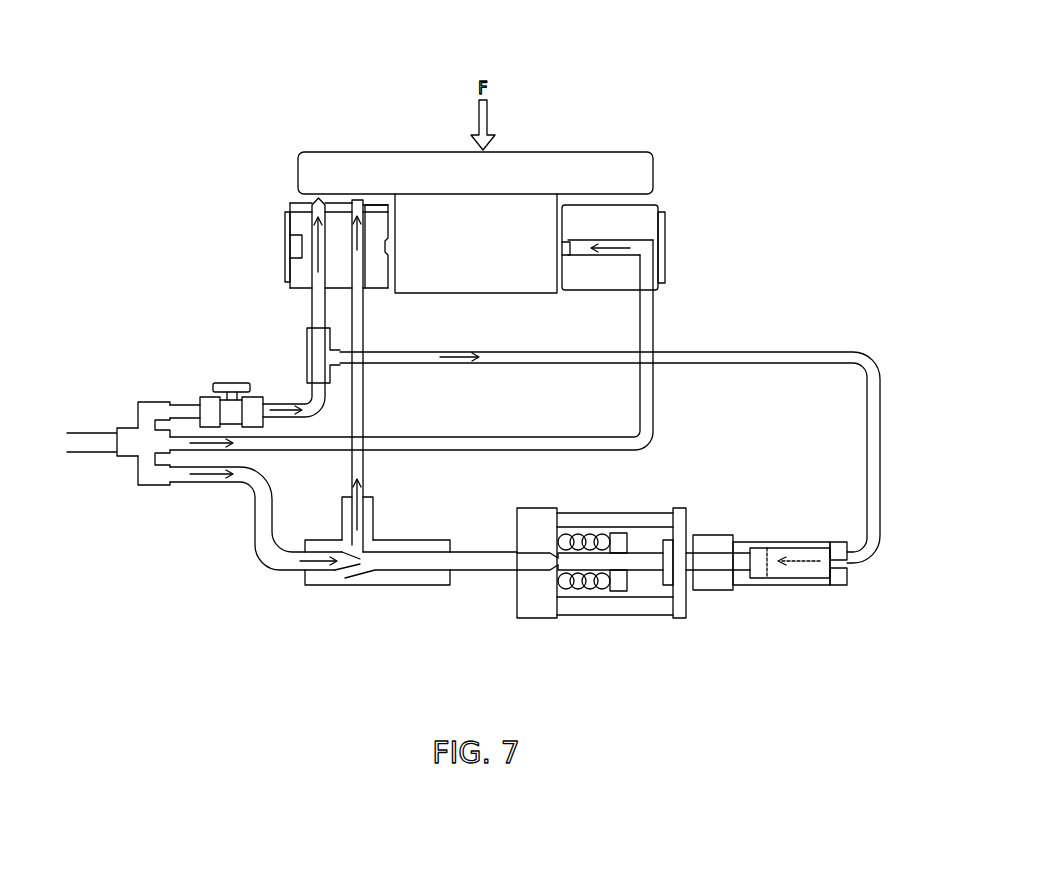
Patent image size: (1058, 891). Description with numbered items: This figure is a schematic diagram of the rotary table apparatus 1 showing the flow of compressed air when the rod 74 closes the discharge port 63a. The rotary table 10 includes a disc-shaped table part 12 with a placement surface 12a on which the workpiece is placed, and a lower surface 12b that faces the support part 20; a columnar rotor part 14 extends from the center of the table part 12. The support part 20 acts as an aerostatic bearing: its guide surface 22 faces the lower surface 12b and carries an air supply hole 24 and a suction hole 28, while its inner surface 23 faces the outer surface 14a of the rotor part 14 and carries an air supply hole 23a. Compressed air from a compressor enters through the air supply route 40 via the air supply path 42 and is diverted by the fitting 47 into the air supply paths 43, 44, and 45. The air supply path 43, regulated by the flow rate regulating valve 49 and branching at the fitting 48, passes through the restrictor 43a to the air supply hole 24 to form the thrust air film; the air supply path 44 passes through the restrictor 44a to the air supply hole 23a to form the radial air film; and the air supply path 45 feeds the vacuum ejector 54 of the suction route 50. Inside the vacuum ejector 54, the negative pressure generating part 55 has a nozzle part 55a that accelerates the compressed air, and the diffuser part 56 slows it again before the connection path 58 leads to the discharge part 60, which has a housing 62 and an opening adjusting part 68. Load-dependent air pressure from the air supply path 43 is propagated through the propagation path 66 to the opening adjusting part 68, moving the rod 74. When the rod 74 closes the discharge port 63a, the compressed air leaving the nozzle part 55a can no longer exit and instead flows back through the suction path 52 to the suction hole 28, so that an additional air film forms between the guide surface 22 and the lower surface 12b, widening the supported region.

The rotary table apparatus 1 is at (458, 55).
The rotary table 10 is at (475, 146).
The table part 12 is at (475, 147).
The placement surface 12a is at (545, 122).
The lower surface 12b is at (393, 162).
The rotor part 14 is at (476, 264).
The outer surface 14a is at (613, 247).
The support part 20 is at (315, 205).
The guide surface 22 is at (362, 205).
The inner surface 23 is at (581, 257).
The air supply hole 23a is at (529, 242).
The air supply hole 24 is at (321, 182).
The suction hole 28 is at (370, 182).
The air supply route 40 is at (204, 375).
The air supply path 42 is at (102, 415).
The air supply path 43 is at (247, 299).
The restrictor 43a is at (273, 194).
The air supply path 44 is at (411, 345).
The restrictor 44a is at (568, 287).
The air supply path 45 is at (256, 518).
The fitting 47 is at (154, 416).
The fitting 48 is at (295, 351).
The flow rate regulating valve 49 is at (231, 382).
The suction route 50 is at (408, 416).
The suction path 52 is at (392, 376).
The vacuum ejector 54 is at (341, 511).
The negative pressure generating part 55 is at (375, 586).
The nozzle part 55a is at (353, 599).
The diffuser part 56 is at (468, 592).
The connection path 58 is at (511, 594).
The discharge part 60 is at (661, 577).
The housing 62 is at (537, 538).
The discharge port 63a is at (516, 538).
The propagation path 66 is at (610, 428).
The opening adjusting part 68 is at (582, 603).
The rod 74 is at (615, 596).